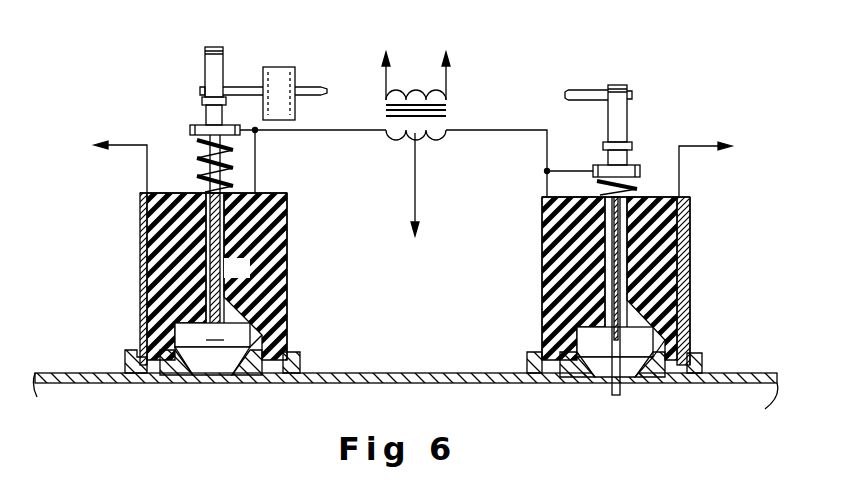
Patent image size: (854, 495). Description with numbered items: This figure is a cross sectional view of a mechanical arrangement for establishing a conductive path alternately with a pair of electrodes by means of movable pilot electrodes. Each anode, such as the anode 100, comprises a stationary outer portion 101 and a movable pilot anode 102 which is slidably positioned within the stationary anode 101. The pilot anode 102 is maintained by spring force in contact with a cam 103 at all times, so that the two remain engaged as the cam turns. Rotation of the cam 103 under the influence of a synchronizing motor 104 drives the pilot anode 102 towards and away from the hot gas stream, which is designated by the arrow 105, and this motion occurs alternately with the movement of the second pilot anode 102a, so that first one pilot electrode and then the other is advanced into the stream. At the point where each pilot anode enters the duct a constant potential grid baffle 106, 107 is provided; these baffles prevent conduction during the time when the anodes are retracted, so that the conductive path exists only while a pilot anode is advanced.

The anode 100 is at (218, 350).
The stationary outer portion 101 is at (252, 250).
The pilot anode 102 is at (204, 250).
The pilot anode 102a is at (613, 390).
The cam 103 is at (229, 54).
The synchronizing motor 104 is at (270, 67).
The hot gas stream 105 is at (82, 413).
The constant potential grid baffle 106 is at (258, 376).
The constant potential grid baffle 107 is at (654, 378).